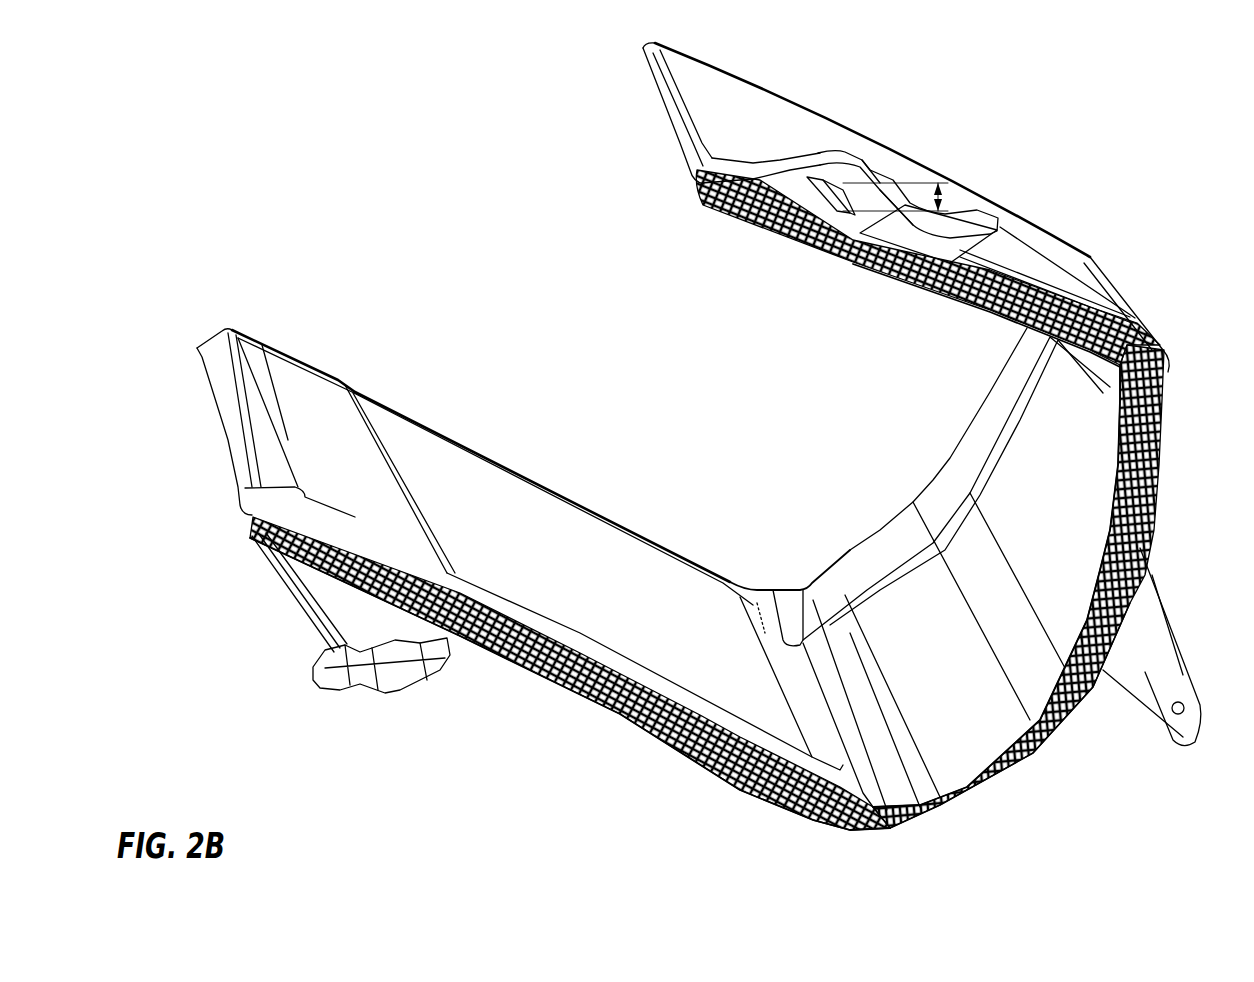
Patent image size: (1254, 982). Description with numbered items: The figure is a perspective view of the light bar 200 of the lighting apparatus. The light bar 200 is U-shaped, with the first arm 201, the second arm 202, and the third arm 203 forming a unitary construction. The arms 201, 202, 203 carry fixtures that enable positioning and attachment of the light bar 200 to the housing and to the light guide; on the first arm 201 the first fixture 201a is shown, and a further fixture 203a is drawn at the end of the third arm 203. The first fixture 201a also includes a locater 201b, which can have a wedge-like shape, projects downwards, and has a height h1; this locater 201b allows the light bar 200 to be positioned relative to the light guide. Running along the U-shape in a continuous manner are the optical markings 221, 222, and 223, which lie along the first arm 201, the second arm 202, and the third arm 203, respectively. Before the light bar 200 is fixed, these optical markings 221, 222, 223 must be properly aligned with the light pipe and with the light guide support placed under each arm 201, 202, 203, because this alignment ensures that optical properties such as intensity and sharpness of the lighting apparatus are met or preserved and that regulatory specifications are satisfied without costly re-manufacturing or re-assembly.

The light bar 200 is at (1122, 145).
The first arm 201 is at (680, 126).
The first fixture 201a is at (875, 170).
The locater 201b is at (830, 180).
The height h1 is at (907, 197).
The second arm 202 is at (950, 450).
The third arm 203 is at (463, 443).
The mounting tab 203a is at (310, 613).
The optical marking 221 is at (757, 232).
The optical marking 222 is at (1072, 727).
The optical marking 223 is at (514, 668).